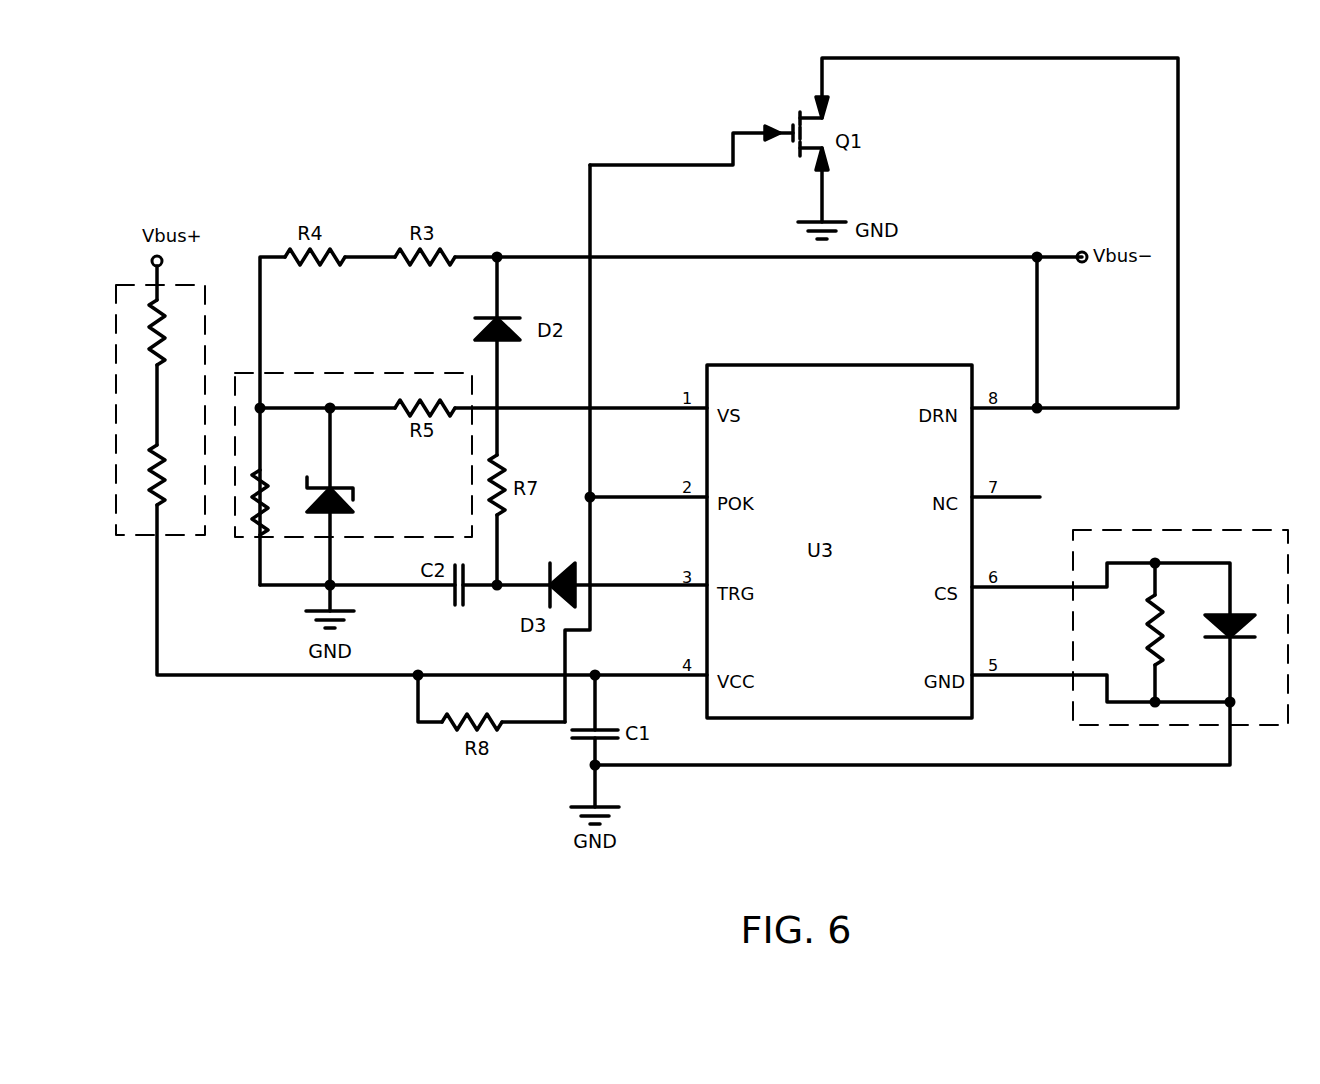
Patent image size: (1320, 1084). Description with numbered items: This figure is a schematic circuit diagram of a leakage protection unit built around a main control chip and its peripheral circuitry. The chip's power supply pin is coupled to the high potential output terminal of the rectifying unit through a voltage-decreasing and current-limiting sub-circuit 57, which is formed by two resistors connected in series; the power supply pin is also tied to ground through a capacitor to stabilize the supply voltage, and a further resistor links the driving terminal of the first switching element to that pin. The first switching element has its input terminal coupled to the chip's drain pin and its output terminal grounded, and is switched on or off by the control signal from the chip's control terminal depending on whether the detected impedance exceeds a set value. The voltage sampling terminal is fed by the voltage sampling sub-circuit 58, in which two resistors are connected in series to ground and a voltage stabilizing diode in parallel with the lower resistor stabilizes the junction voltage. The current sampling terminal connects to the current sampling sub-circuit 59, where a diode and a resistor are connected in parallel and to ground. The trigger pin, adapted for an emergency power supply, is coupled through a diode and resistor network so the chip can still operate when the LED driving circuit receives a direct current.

The voltage-decreasing and current-limiting sub-circuit 57 is at (178, 292).
The voltage sampling sub-circuit 58 is at (315, 380).
The current sampling sub-circuit 59 is at (1147, 535).